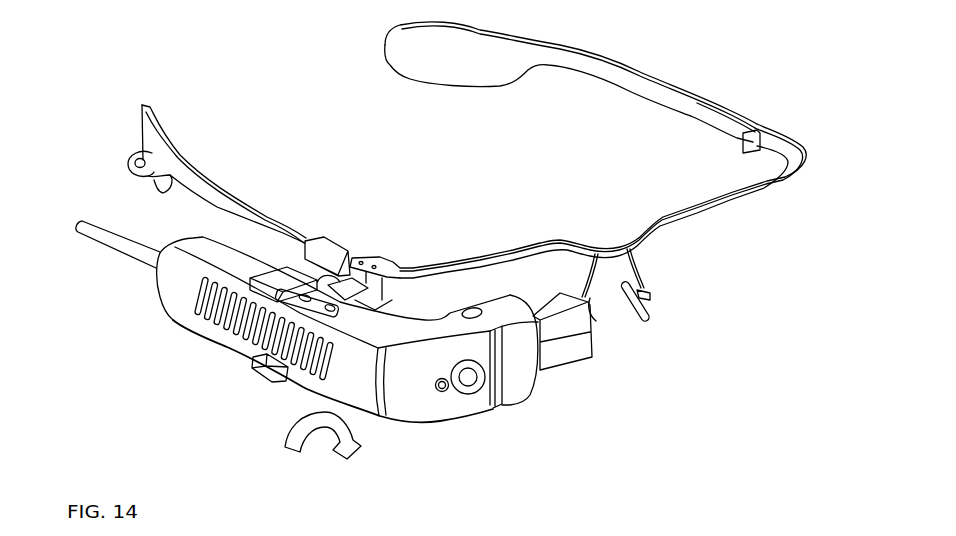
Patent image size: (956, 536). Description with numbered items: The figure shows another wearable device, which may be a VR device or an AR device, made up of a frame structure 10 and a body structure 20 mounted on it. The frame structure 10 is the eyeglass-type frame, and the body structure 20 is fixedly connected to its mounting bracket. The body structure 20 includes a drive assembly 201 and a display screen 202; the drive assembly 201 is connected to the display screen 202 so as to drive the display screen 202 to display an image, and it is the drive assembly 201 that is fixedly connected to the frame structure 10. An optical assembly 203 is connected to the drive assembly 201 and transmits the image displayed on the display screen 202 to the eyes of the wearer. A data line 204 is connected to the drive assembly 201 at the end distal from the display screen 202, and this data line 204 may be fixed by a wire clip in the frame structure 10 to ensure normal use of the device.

The frame structure 10 is at (740, 182).
The body structure 20 is at (348, 349).
The drive assembly 201 is at (407, 390).
The display screen 202 is at (576, 357).
The optical assembly 203 is at (506, 372).
The data line 204 is at (127, 250).